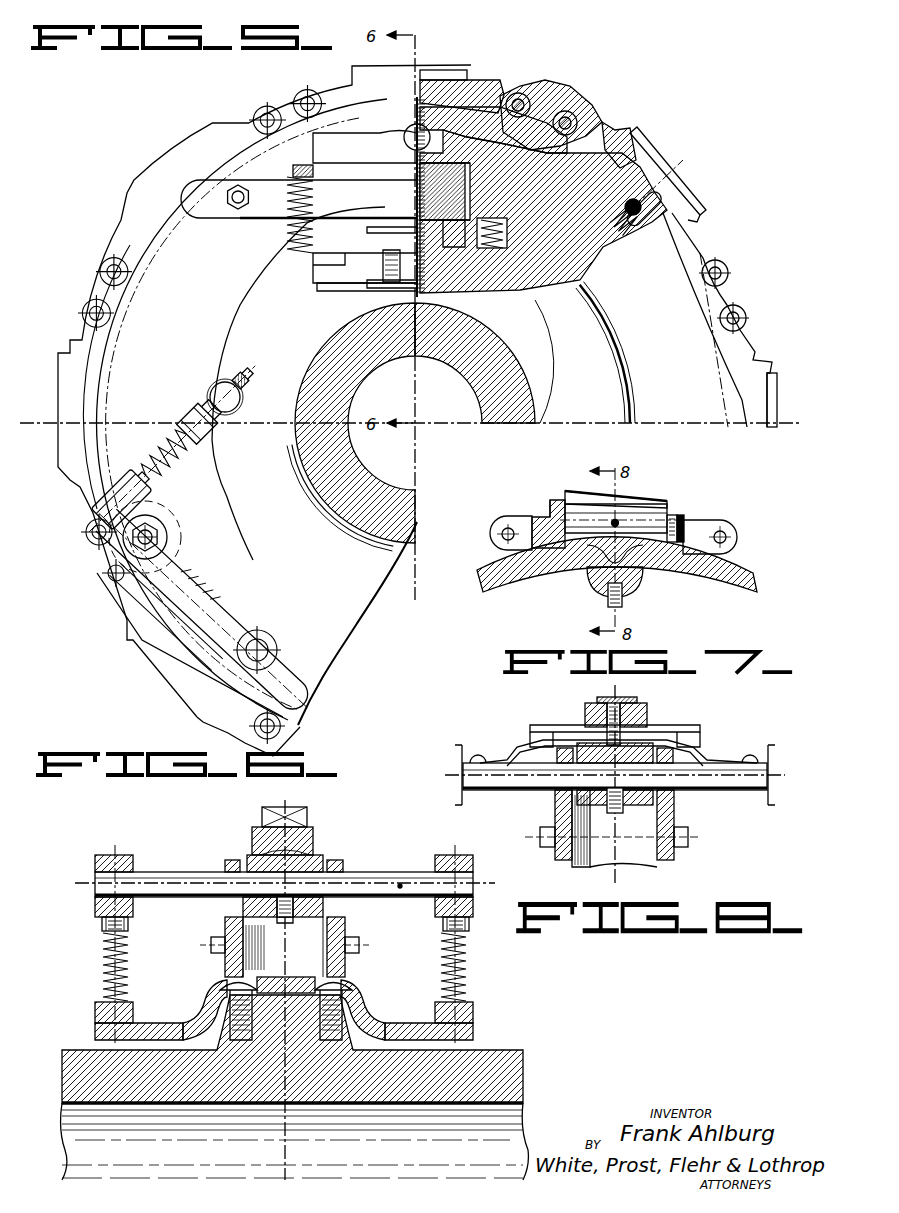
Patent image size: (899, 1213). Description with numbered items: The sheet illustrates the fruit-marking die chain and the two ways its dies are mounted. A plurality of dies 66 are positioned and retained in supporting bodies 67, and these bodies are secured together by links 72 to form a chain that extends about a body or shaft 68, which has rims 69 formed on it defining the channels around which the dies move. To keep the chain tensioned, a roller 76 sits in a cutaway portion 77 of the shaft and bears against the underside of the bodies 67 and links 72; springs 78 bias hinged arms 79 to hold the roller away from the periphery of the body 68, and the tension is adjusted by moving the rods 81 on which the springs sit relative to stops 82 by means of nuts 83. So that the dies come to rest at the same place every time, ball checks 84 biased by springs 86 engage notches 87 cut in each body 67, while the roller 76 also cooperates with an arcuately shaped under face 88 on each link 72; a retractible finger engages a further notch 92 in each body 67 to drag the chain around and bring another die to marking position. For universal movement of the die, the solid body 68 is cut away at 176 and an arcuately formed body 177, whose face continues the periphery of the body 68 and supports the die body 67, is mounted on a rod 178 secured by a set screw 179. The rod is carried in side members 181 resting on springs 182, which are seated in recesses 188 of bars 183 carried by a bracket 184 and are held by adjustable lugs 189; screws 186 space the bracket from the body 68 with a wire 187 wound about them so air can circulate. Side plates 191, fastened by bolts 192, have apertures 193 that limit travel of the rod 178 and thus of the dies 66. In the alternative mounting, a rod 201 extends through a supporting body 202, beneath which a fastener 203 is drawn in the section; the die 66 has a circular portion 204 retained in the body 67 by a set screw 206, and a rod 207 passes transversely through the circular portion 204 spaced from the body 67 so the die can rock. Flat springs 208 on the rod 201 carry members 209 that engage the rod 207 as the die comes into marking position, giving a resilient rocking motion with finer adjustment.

In FIG. 5, the die 66 is at (458, 72).
In FIG. 6, the die 66 is at (307, 812).
In FIG. 7, the die 66 is at (577, 493).
In FIG. 8, the die 66 is at (597, 700).
In FIG. 5, the supporting body 67 is at (480, 88).
In FIG. 6, the supporting body 67 is at (317, 834).
In FIG. 7, the supporting body 67 is at (539, 519).
In FIG. 8, the supporting body 67 is at (641, 707).
In FIG. 5, the body or shaft 68 is at (656, 363).
In FIG. 6, the body or shaft 68 is at (280, 1069).
In FIG. 5, the rim 69 is at (690, 245).
In FIG. 5, the link 72 is at (540, 97).
In FIG. 5, the roller 76 is at (162, 513).
In FIG. 5, the cutaway portion 77 is at (184, 523).
In FIG. 5, the spring 78 is at (158, 448).
In FIG. 5, the hinged arm 79 is at (200, 562).
In FIG. 5, the rod 81 is at (182, 422).
In FIG. 5, the stop 82 is at (216, 382).
In FIG. 5, the nut 83 is at (208, 394).
In FIG. 5, the ball check 84 is at (640, 218).
In FIG. 5, the spring 86 is at (626, 233).
In FIG. 5, the notch 87 is at (657, 208).
In FIG. 6, the notch 87 is at (301, 858).
In FIG. 5, the arcuately shaped under face 88 is at (566, 108).
In FIG. 5, the notch 92 is at (616, 137).
In FIG. 7, the notch 92 is at (547, 511).
In FIG. 5, the cutaway 176 is at (540, 280).
In FIG. 5, the arcuately formed body 177 is at (472, 132).
In FIG. 6, the arcuately formed body 177 is at (239, 858).
In FIG. 5, the rod 178 is at (412, 128).
In FIG. 6, the rod 178 is at (387, 874).
In FIG. 5, the set screw 179 is at (455, 172).
In FIG. 6, the set screw 179 is at (283, 947).
In FIG. 5, the side member 181 is at (372, 155).
In FIG. 6, the side member 181 is at (98, 857).
In FIG. 5, the spring 182 is at (330, 205).
In FIG. 6, the spring 182 is at (103, 953).
In FIG. 5, the bar 183 is at (350, 293).
In FIG. 6, the bar 183 is at (96, 1022).
In FIG. 5, the bracket 184 is at (370, 288).
In FIG. 6, the bracket 184 is at (206, 1001).
In FIG. 5, the screw 186 is at (413, 223).
In FIG. 6, the screw 186 is at (227, 985).
In FIG. 5, the wire 187 is at (464, 208).
In FIG. 6, the wire 187 is at (341, 994).
In FIG. 5, the recess 188 is at (318, 266).
In FIG. 6, the recess 188 is at (96, 1005).
In FIG. 5, the adjustable lug 189 is at (313, 186).
In FIG. 6, the adjustable lug 189 is at (100, 931).
In FIG. 5, the side plate 191 is at (293, 223).
In FIG. 6, the side plate 191 is at (231, 860).
In FIG. 5, the bolt 192 is at (252, 187).
In FIG. 6, the bolt 192 is at (226, 946).
In FIG. 6, the aperture 193 is at (245, 908).
In FIG. 7, the rod 201 is at (600, 590).
In FIG. 8, the rod 201 is at (531, 781).
In FIG. 7, the supporting body 202 is at (641, 589).
In FIG. 8, the supporting body 202 is at (656, 800).
In FIG. 8, the bolt 203 is at (618, 808).
In FIG. 7, the circular portion 204 is at (653, 514).
In FIG. 8, the circular portion 204 is at (590, 712).
In FIG. 7, the set screw 206 is at (684, 518).
In FIG. 7, the rod 207 is at (617, 521).
In FIG. 8, the rod 207 is at (668, 731).
In FIG. 7, the flat spring 208 is at (590, 568).
In FIG. 8, the flat spring 208 is at (716, 754).
In FIG. 7, the member 209 is at (658, 563).
In FIG. 8, the member 209 is at (702, 740).